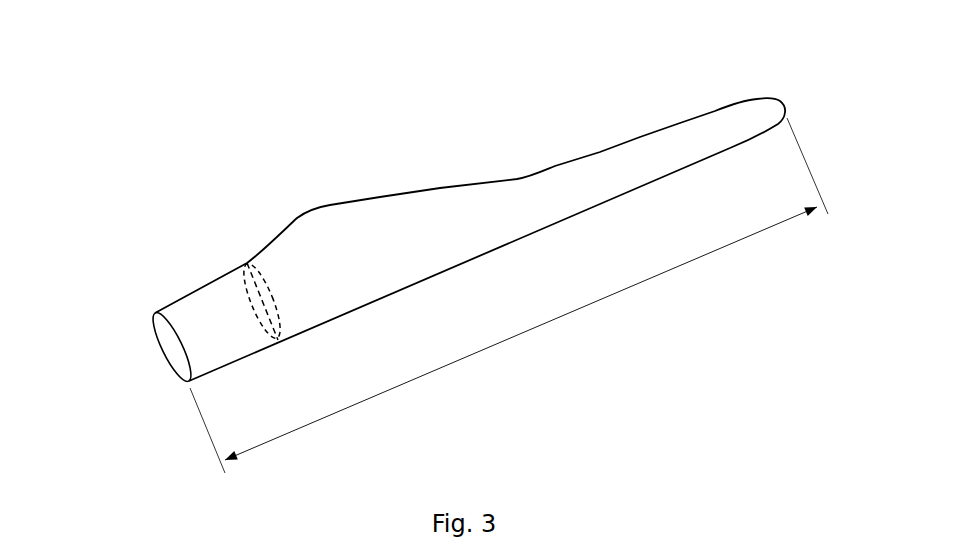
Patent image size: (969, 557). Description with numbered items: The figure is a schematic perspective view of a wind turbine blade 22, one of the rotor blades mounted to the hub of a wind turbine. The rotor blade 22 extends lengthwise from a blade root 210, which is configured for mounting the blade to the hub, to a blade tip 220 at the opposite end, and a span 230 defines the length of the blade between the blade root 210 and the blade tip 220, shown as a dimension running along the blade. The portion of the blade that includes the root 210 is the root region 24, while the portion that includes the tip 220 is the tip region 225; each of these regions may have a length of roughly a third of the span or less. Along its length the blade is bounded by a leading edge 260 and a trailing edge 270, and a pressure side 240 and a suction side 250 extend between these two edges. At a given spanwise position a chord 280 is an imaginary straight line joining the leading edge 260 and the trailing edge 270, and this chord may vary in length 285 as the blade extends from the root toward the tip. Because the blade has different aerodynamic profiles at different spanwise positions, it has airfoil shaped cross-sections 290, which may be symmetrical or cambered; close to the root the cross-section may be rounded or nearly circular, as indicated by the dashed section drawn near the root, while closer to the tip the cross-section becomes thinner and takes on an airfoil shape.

The wind turbine blade 22 is at (452, 245).
The root region 24 is at (247, 358).
The blade root 210 is at (143, 357).
The blade tip 220 is at (793, 102).
The tip region 225 is at (622, 153).
The span 230 is at (523, 333).
The pressure side 240 is at (333, 238).
The suction side 250 is at (532, 218).
The leading edge 260 is at (577, 215).
The trailing edge 270 is at (525, 175).
The chord 280 is at (244, 300).
The chord length 285 is at (555, 164).
The airfoil shaped cross-section 290 is at (270, 283).